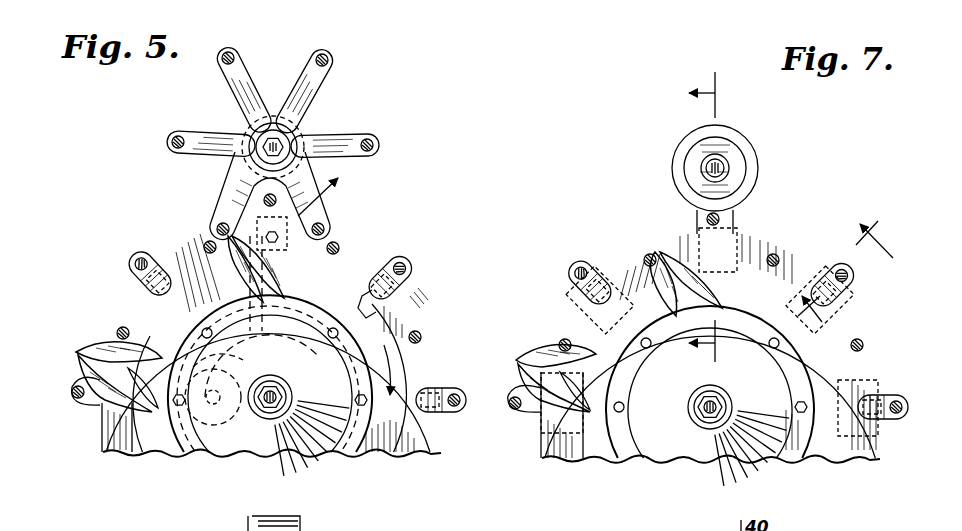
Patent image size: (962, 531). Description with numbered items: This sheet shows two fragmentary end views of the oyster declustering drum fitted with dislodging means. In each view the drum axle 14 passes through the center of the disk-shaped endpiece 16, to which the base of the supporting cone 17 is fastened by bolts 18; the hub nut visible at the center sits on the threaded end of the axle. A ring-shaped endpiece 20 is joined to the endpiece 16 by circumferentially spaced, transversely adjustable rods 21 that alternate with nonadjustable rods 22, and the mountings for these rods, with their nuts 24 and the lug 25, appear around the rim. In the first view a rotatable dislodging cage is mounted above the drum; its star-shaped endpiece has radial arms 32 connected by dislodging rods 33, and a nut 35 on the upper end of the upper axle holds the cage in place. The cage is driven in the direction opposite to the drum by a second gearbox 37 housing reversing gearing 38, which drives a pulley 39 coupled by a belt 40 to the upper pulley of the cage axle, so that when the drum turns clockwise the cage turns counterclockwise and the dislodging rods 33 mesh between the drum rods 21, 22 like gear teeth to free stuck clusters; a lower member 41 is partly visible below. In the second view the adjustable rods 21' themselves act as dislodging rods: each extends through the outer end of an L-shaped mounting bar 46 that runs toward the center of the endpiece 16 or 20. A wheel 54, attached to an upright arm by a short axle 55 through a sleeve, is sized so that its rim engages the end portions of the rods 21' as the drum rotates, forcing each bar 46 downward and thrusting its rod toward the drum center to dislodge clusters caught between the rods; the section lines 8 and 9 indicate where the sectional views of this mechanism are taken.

In FIG. 5, the drum axle 14 is at (278, 376).
In FIG. 7, the drum axle 14 is at (700, 404).
In FIG. 5, the disk-shaped endpiece 16 is at (138, 290).
In FIG. 7, the disk-shaped endpiece 16 is at (790, 264).
In FIG. 5, the supporting cone 17 is at (321, 422).
In FIG. 7, the supporting cone 17 is at (668, 440).
In FIG. 5, the bolts 18 is at (202, 331).
In FIG. 7, the bolts 18 is at (618, 414).
In FIG. 5, the ring-shaped endpiece 20 is at (418, 440).
In FIG. 5, the transversely adjustable rods 21 is at (253, 306).
In FIG. 7, the adjustable rods 21' is at (707, 334).
In FIG. 5, the nonadjustable rods 22 is at (342, 244).
In FIG. 7, the nonadjustable rods 22 is at (652, 252).
In FIG. 5, the nut 24 is at (80, 432).
In FIG. 5, the lug 25 is at (370, 306).
In FIG. 5, the radial arms 32 is at (240, 97).
In FIG. 5, the dislodging rods 33 is at (170, 143).
In FIG. 5, the nut 35 is at (258, 146).
In FIG. 5, the second gearbox 37 is at (360, 359).
In FIG. 5, the reversing gearing 38 is at (246, 452).
In FIG. 5, the pulley 39 is at (195, 448).
In FIG. 5, the belt 40 is at (237, 190).
In FIG. 5, the lower member 41 is at (290, 521).
In FIG. 7, the L-shaped mounting bar 46 is at (704, 224).
In FIG. 7, the wheel 54 is at (754, 188).
In FIG. 7, the short axle 55 is at (730, 166).
In FIG. 7, the section line 8 is at (712, 219).
In FIG. 7, the section line 9 is at (849, 278).